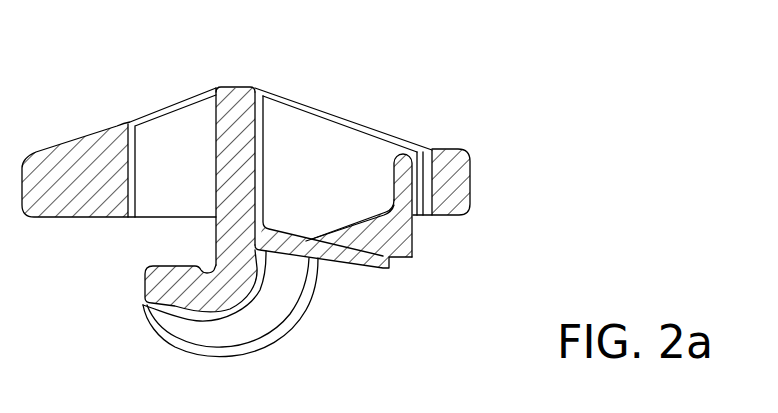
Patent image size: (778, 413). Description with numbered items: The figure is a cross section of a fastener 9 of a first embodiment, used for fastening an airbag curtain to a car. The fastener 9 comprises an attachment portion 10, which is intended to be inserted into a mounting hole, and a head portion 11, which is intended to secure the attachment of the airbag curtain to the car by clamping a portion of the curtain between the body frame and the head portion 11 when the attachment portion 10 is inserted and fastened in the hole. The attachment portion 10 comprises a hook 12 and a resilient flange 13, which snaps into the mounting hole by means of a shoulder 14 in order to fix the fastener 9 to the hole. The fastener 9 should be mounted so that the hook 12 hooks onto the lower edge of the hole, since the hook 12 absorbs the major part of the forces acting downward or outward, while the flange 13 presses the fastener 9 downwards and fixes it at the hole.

The fastener 9 is at (483, 147).
The attachment portion 10 is at (292, 357).
The head portion 11 is at (395, 83).
The hook 12 is at (220, 333).
The resilient flange 13 is at (417, 233).
The shoulder 14 is at (407, 270).